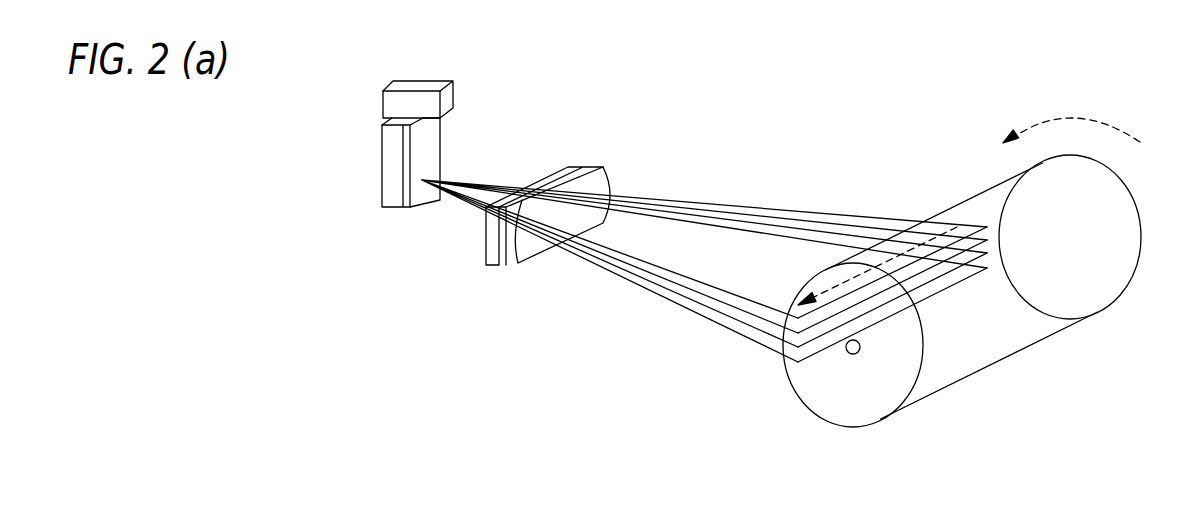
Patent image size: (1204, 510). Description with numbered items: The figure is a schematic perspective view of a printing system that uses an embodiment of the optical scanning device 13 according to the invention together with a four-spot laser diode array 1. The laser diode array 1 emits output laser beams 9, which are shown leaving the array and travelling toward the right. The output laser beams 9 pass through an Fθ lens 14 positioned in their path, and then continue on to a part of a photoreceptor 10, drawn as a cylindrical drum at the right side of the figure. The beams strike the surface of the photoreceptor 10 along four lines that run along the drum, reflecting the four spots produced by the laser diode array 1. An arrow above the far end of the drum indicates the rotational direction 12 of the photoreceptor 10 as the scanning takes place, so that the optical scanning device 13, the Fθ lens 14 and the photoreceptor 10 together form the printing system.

The 4-spot laser diode array 1 is at (389, 99).
The optical scanning device 13 is at (378, 162).
The output laser beams 9 is at (538, 206).
The Fθ lens 14 is at (573, 194).
The part of a photoreceptor 10 is at (962, 291).
The rotational direction of the photoreceptor 12 is at (1071, 114).